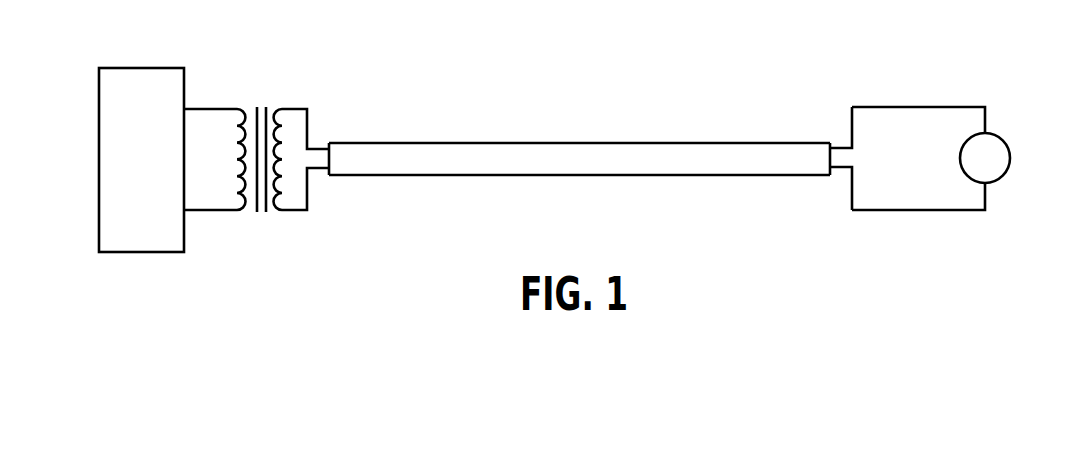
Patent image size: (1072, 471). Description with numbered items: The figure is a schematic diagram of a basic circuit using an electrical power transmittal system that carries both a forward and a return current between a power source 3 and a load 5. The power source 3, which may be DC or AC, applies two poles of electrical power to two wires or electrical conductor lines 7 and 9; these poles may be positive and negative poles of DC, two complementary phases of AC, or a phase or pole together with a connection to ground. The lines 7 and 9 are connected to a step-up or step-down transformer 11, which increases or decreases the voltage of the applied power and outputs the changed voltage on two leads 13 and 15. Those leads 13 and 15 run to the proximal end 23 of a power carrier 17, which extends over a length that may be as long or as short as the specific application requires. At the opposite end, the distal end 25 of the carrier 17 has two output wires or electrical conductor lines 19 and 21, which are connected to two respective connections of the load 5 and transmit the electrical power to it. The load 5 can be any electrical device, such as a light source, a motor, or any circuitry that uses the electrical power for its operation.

The power source 3 is at (128, 172).
The load 5 is at (1011, 157).
The electrical conductor line 7 is at (208, 211).
The electrical conductor line 9 is at (208, 110).
The transformer 11 is at (272, 76).
The lead 13 is at (310, 198).
The lead 15 is at (312, 120).
The power carrier 17 is at (524, 153).
The output line 19 is at (850, 192).
The output line 21 is at (848, 120).
The proximal end 23 is at (339, 142).
The distal end 25 is at (823, 162).